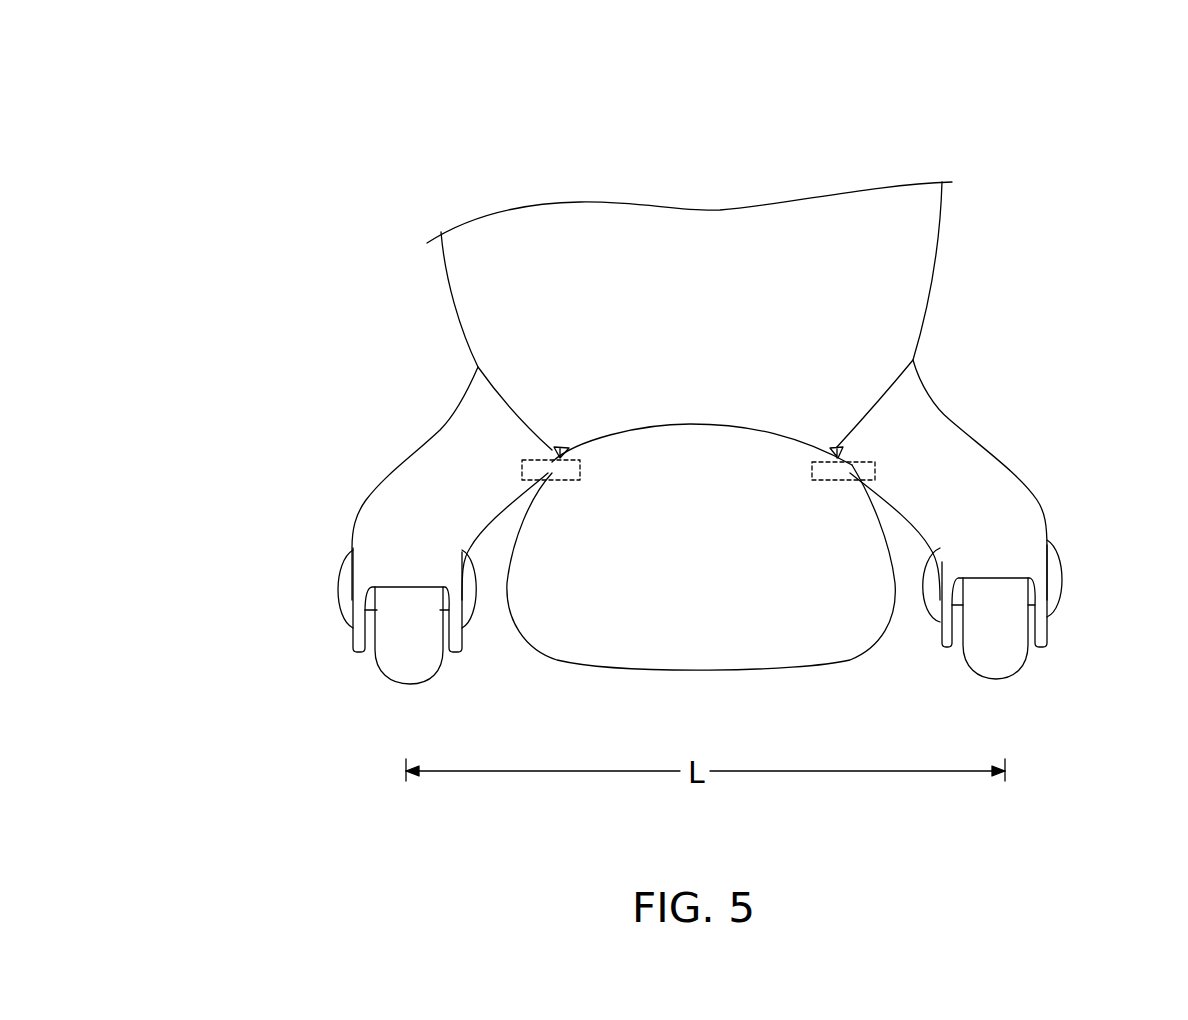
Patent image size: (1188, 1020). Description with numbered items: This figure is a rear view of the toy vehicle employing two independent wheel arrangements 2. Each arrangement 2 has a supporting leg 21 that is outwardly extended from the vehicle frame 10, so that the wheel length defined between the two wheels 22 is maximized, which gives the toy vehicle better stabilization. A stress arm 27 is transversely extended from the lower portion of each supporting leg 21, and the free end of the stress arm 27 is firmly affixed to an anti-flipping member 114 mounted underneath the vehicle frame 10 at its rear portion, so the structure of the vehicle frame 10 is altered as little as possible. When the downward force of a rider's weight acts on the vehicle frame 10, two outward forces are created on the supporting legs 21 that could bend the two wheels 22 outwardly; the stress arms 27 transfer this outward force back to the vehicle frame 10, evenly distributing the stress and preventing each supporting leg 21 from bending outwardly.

The vehicle frame 10 is at (826, 212).
The anti-flipping member 114 is at (645, 437).
The stress arm 27 is at (545, 470).
The independent wheel arrangement 2 is at (247, 422).
The supporting leg 21 is at (393, 490).
The wheel 22 is at (402, 675).